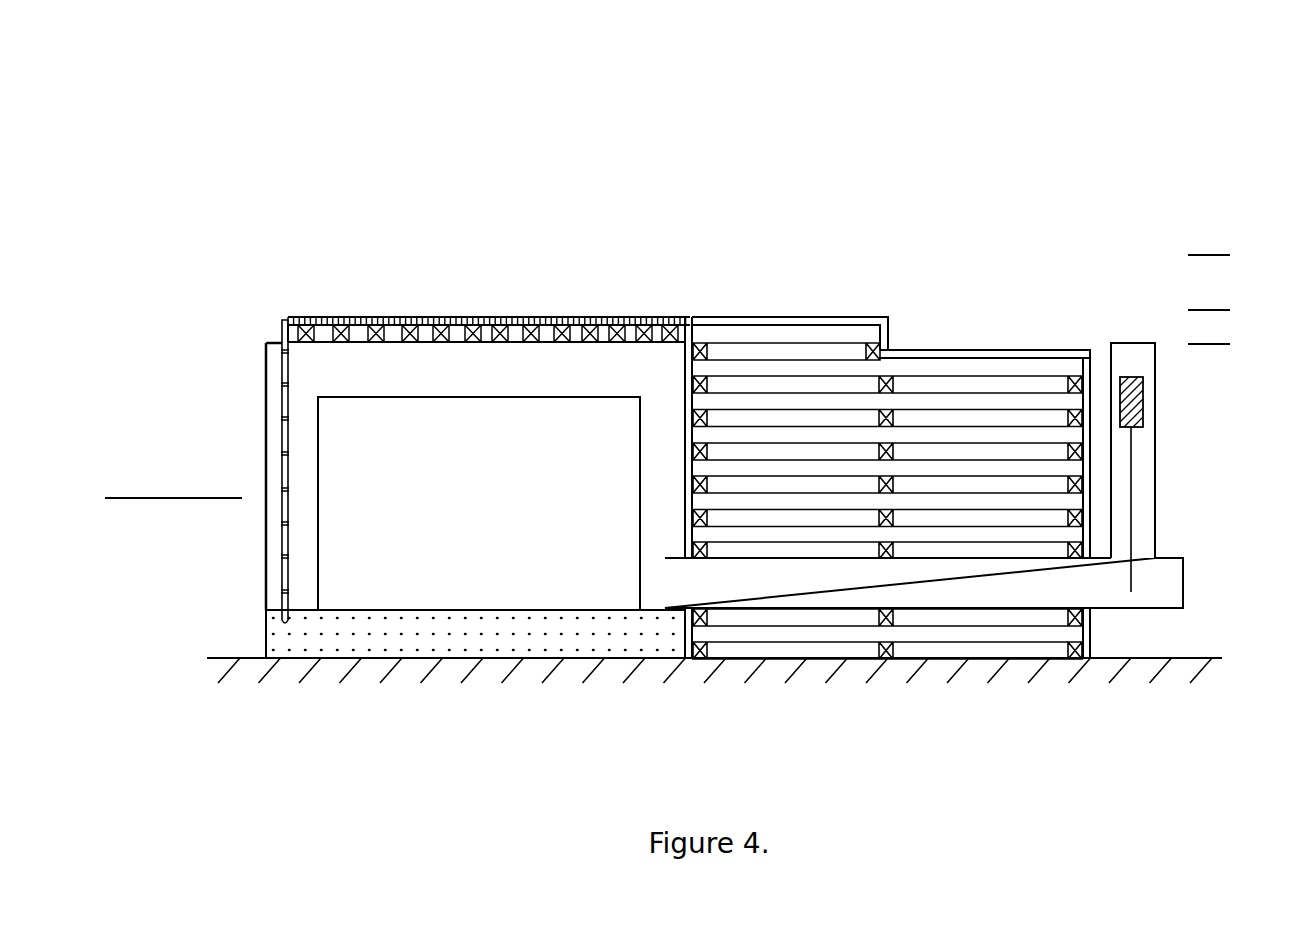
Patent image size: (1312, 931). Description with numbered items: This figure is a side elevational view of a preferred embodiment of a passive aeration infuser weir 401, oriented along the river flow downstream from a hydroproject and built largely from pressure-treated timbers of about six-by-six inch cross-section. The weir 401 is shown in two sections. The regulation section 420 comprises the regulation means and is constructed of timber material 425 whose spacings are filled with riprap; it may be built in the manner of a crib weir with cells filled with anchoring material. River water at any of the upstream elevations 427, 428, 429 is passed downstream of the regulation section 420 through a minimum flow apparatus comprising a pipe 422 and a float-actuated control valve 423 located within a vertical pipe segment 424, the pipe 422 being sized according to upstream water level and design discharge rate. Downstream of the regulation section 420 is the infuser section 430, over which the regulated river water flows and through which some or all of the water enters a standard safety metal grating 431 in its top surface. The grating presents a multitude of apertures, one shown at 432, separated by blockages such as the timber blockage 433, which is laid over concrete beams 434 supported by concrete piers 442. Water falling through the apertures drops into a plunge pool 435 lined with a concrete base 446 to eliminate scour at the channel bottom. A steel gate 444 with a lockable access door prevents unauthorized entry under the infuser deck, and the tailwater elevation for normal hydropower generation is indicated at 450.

The passive aeration infuser weir 401 is at (665, 145).
The regulation section 420 is at (912, 247).
The pipe 422 is at (950, 580).
The float-actuated control valve 423 is at (1142, 398).
The vertical pipe segment 424 is at (1155, 490).
The timber material 425 is at (882, 335).
The water elevation 427 is at (1240, 344).
The water elevation 428 is at (1240, 312).
The water elevation 429 is at (1240, 257).
The infuser section 430 is at (522, 242).
The safety metal grating 431 is at (385, 322).
The aperture 432 is at (455, 340).
The blockage 433 is at (503, 338).
The concrete beam 434 is at (522, 387).
The falling water plunge pool 435 is at (500, 550).
The concrete pier 442 is at (318, 500).
The steel gate 444 is at (292, 433).
The concrete base 446 is at (500, 637).
The tailwater elevation 450 is at (173, 483).